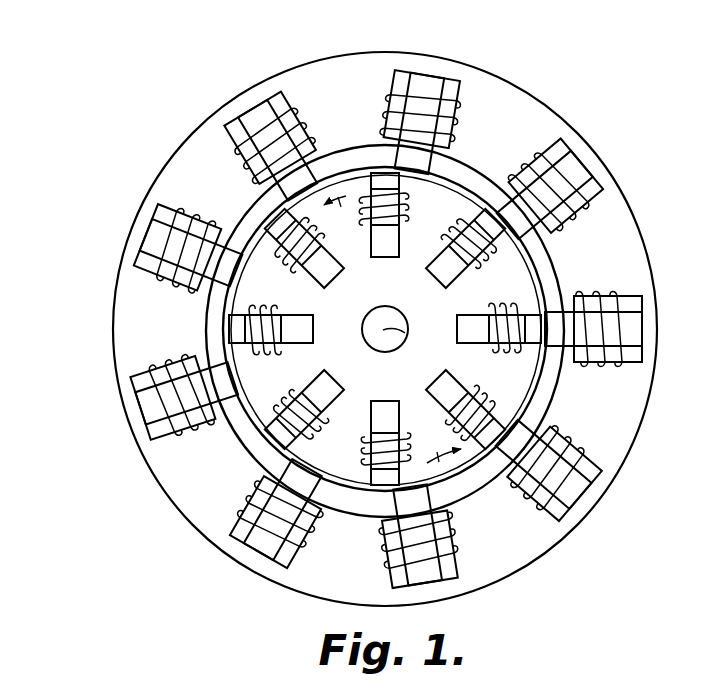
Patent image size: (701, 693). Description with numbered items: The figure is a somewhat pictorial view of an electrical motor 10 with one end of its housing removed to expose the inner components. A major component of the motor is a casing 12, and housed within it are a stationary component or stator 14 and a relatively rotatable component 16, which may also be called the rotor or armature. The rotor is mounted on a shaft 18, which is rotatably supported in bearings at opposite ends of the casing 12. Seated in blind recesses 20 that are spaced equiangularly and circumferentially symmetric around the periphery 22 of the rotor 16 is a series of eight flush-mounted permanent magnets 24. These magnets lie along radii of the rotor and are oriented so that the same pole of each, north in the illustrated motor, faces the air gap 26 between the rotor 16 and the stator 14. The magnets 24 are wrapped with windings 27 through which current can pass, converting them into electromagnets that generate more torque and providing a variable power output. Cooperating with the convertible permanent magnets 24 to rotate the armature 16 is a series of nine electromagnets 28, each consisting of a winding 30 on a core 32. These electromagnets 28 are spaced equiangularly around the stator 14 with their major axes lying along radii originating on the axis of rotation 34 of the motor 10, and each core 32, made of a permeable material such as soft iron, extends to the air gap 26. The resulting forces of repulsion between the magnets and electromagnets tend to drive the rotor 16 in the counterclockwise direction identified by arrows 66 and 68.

The motor 10 is at (323, 48).
The casing 12 is at (212, 106).
The stator 14 is at (242, 204).
The rotor 16 is at (247, 239).
The shaft 18 is at (389, 306).
The blind recesses 20 is at (302, 330).
The periphery 22 is at (246, 276).
The permanent magnets 24 is at (310, 328).
The air gap 26 is at (233, 361).
The windings 27 is at (408, 444).
The electromagnets 28 is at (134, 250).
The winding 30 is at (178, 428).
The core 32 is at (216, 424).
The axis of rotation 34 is at (407, 333).
The arrow 66 is at (338, 218).
The arrow 68 is at (441, 442).